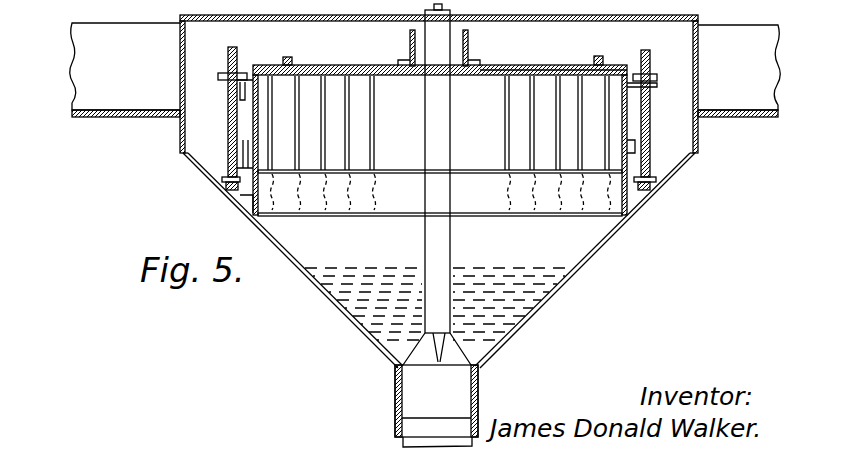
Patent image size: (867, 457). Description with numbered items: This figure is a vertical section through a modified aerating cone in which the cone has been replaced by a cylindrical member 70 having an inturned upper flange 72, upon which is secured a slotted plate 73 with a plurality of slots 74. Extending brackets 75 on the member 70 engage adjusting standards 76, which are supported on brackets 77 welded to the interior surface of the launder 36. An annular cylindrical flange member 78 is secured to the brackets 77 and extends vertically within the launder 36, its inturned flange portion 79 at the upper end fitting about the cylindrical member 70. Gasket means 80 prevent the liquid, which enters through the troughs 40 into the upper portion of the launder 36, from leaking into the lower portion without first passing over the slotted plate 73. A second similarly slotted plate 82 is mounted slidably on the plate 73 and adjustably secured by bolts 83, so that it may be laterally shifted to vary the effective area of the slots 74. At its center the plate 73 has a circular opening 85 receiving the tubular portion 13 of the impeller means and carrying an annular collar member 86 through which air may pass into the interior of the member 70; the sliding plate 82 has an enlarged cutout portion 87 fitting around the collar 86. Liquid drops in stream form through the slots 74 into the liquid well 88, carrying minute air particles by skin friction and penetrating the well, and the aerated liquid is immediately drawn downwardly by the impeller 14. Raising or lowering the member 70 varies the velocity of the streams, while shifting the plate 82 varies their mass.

The tubular portion 13 is at (425, 192).
The impeller 14 is at (410, 432).
The launder 36 is at (314, 296).
The troughs 40 is at (150, 10).
The cylindrical member 70 is at (622, 124).
The inturned upper flange 72 is at (618, 76).
The slotted plate 73 is at (247, 68).
The slots 74 is at (362, 63).
The extending brackets 75 is at (228, 93).
The adjusting standards 76 is at (228, 58).
The brackets 77 is at (225, 186).
The annular cylindrical flange member 78 is at (257, 208).
The inturned flange portion 79 is at (228, 137).
The gasket means 80 is at (237, 160).
The second slotted plate 82 is at (550, 64).
The bolts 83 is at (290, 57).
The circular opening 85 is at (456, 78).
The annular collar member 86 is at (468, 33).
The enlarged cutout portion 87 is at (473, 65).
The liquid well 88 is at (552, 278).